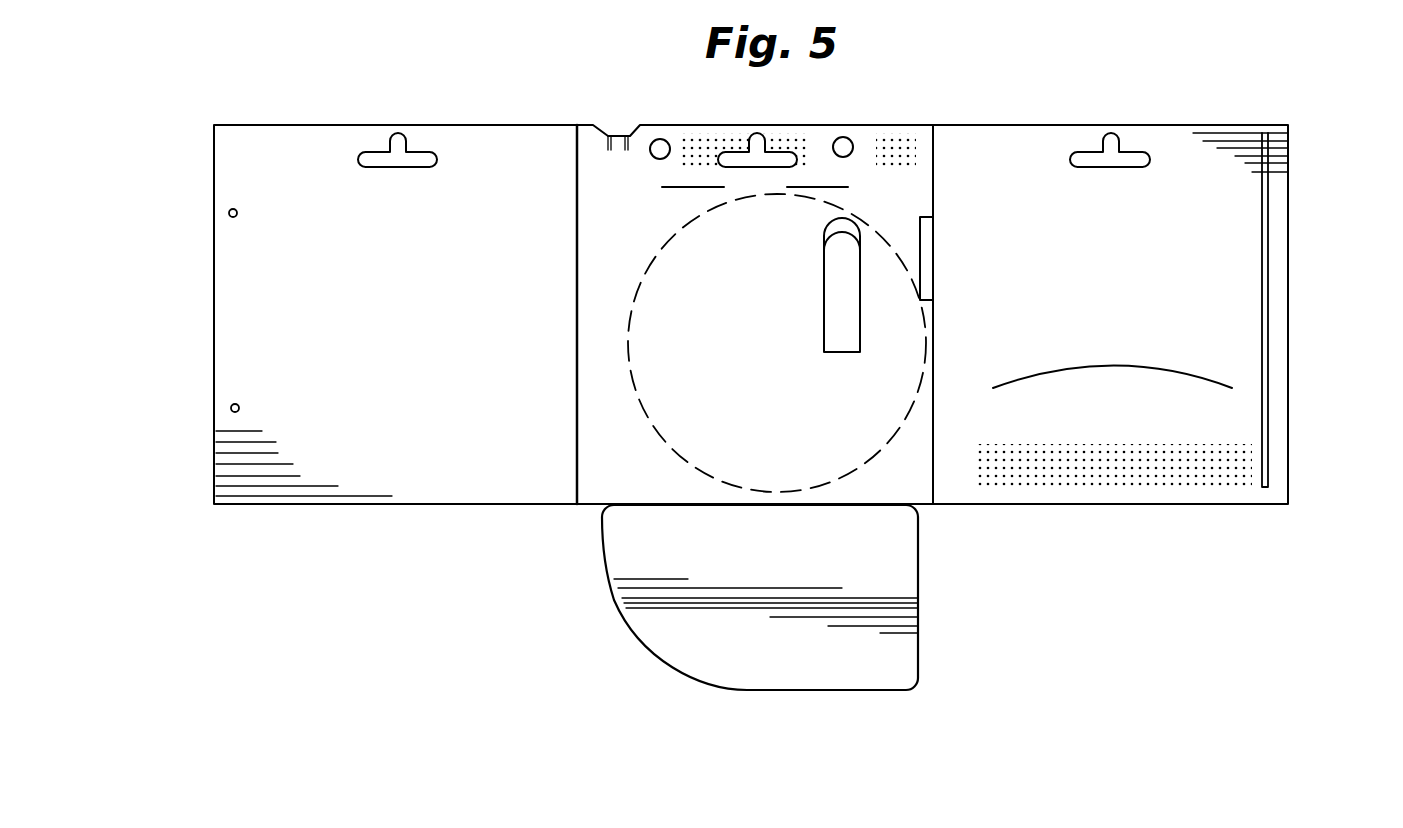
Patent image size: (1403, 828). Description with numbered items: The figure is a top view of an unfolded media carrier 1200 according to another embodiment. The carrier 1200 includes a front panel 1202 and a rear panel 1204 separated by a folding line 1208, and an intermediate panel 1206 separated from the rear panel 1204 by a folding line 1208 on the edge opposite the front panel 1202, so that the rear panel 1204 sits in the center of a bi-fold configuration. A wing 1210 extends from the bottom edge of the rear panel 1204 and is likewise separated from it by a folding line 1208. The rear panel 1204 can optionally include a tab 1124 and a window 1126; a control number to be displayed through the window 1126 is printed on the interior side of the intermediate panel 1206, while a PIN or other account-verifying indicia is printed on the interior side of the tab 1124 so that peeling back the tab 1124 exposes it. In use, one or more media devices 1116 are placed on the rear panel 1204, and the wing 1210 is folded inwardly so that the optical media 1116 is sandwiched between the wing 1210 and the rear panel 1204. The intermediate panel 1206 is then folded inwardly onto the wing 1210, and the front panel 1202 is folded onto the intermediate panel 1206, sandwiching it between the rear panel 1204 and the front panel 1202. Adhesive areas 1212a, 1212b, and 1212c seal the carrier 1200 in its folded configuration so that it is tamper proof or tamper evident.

The carrier 1200 is at (343, 600).
The front panel 1202 is at (243, 262).
The rear panel 1204 is at (625, 190).
The intermediate panel 1206 is at (1245, 238).
The folding line 1208 is at (577, 150).
The wing 1210 is at (868, 670).
The adhesive area 1212a is at (1208, 487).
The adhesive area 1212b is at (1268, 468).
The adhesive area 1212c is at (843, 137).
The media device 1116 is at (863, 447).
The tab 1124 is at (849, 340).
The window 1126 is at (935, 243).